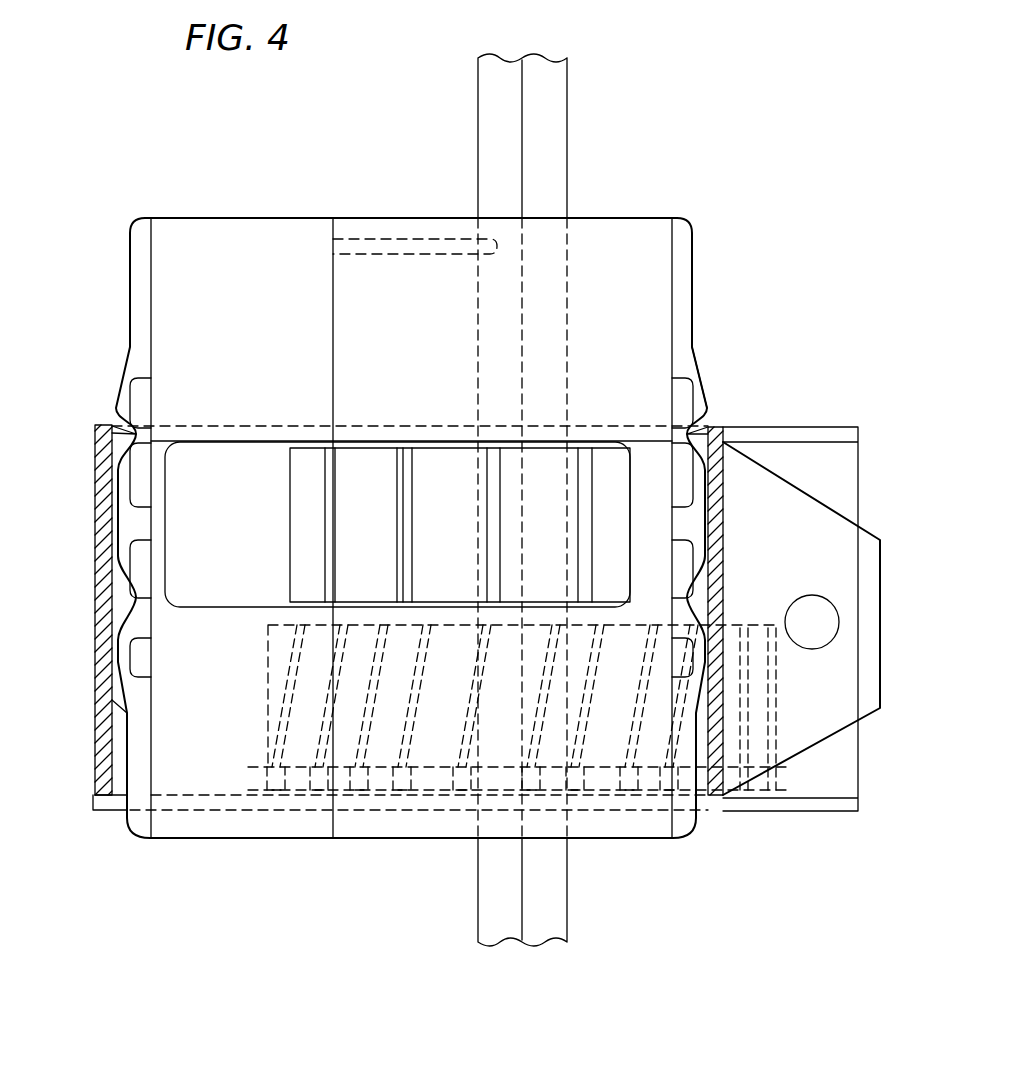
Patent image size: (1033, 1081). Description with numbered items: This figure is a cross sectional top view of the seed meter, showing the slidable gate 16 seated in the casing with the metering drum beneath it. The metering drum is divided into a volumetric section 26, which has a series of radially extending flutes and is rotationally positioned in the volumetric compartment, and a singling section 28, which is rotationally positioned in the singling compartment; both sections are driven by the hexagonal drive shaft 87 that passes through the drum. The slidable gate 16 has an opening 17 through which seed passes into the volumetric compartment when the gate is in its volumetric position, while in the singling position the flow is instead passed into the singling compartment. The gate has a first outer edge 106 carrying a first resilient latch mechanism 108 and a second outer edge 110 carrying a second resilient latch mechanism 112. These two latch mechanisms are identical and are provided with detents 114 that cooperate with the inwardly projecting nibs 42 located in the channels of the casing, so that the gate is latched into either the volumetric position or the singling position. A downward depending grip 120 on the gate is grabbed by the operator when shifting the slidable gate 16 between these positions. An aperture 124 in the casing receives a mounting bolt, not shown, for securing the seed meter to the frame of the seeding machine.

The slidable gate 16 is at (250, 316).
The opening 17 is at (165, 517).
The volumetric section 26 is at (279, 556).
The singling section 28 is at (266, 712).
The nib 42 is at (104, 620).
The hexagonal drive shaft 87 is at (567, 96).
The first outer edge 106 is at (121, 823).
The first resilient latch mechanism 108 is at (112, 712).
The second outer edge 110 is at (716, 820).
The second resilient latch mechanism 112 is at (731, 413).
The detents 114 is at (103, 440).
The grip 120 is at (410, 240).
The aperture 124 is at (826, 600).